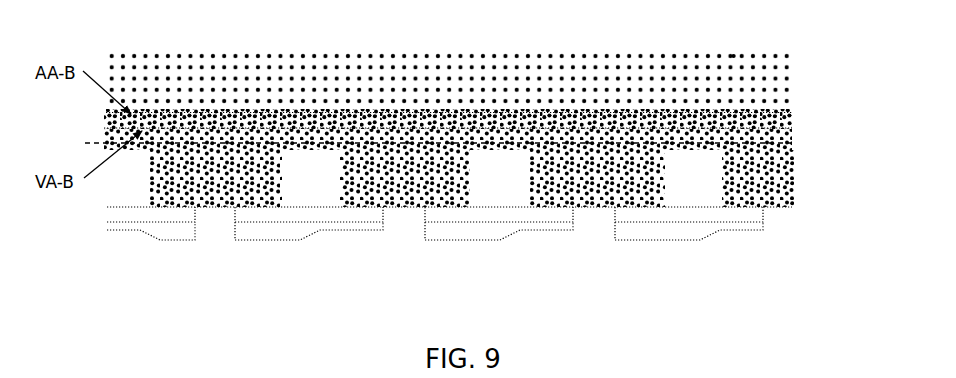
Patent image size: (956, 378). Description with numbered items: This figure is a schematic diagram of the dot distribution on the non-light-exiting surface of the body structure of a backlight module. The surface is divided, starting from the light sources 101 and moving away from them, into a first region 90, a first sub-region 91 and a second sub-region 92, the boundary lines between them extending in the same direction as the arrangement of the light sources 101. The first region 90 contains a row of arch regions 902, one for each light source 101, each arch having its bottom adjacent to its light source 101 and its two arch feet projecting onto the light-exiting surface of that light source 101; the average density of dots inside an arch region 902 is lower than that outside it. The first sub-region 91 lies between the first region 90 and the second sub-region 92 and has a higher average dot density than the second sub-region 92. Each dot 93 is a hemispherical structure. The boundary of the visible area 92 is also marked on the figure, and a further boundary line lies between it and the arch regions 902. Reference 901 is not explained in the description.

The first region 90 is at (860, 144).
The conductive pillar 901 is at (786, 180).
The arch region 902 is at (700, 186).
The first sub-region 91 is at (800, 114).
The second sub-region 92 is at (800, 55).
The dot 93 is at (736, 53).
The light source 101 is at (487, 213).